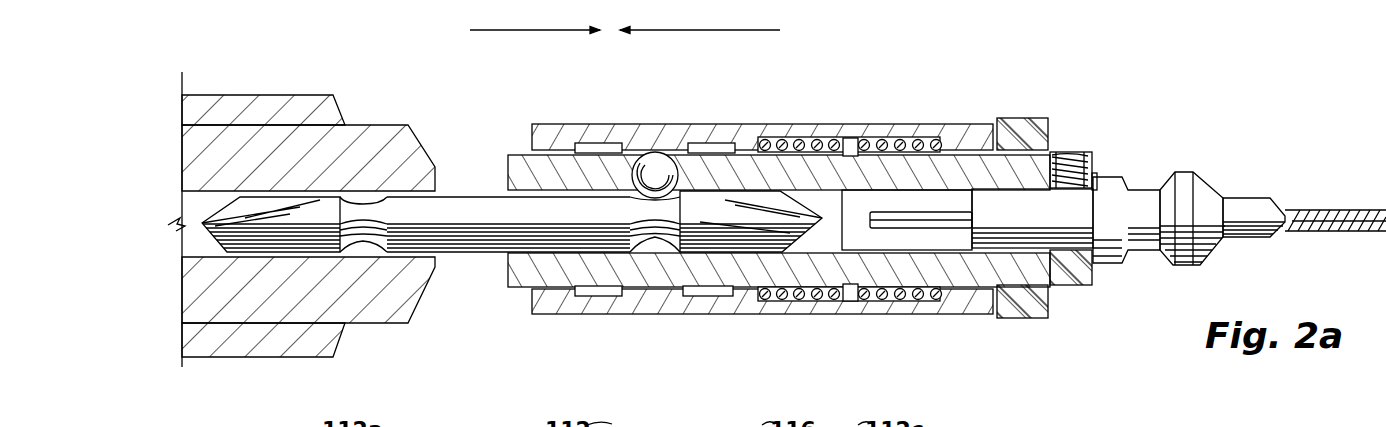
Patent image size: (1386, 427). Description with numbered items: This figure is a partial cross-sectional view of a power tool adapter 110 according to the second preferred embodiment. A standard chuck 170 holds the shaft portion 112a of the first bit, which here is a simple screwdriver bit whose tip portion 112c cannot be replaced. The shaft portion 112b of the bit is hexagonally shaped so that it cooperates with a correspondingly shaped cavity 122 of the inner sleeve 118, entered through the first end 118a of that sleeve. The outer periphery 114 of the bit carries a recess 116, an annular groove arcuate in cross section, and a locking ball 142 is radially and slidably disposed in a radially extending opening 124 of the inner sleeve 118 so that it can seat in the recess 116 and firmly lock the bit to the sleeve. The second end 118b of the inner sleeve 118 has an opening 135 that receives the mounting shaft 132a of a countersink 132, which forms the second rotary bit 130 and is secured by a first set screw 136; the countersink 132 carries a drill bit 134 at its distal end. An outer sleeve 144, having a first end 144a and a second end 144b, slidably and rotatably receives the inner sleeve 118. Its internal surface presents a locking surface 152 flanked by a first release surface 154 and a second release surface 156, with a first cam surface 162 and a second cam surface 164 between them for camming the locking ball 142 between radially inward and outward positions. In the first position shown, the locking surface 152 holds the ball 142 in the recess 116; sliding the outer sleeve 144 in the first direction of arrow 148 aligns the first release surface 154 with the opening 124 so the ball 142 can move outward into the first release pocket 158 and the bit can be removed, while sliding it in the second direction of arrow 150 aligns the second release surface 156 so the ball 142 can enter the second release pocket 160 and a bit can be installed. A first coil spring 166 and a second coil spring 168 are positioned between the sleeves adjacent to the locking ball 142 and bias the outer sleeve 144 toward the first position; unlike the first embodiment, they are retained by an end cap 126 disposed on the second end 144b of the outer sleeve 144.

The adapter 110 is at (1190, 87).
The shaft portion 112a is at (262, 200).
The shaft portion 112b is at (485, 224).
The tip portion 112c is at (793, 246).
The outer periphery 114 is at (434, 262).
The recess 116 is at (650, 240).
The inner sleeve 118 is at (835, 140).
The first end of inner sleeve 118a is at (460, 255).
The second end of inner sleeve 118b is at (1092, 170).
The cavity 122 is at (868, 152).
The radially extending opening 124 is at (688, 145).
The collar flange 126 is at (1007, 118).
The second rotary bit 130 is at (1213, 177).
The countersink 132 is at (1288, 232).
The mounting shaft 132a is at (1073, 255).
The drill bit 134 is at (1352, 210).
The opening 135 is at (1090, 178).
The first set screw 136 is at (1073, 152).
The locking ball 142 is at (663, 160).
The outer sleeve 144 is at (830, 123).
The first end of outer sleeve 144a is at (520, 300).
The second end of outer sleeve 144b is at (963, 303).
The arrow 148 is at (570, 28).
The arrow 150 is at (658, 28).
The locking surface 152 is at (628, 135).
The first release surface 154 is at (728, 136).
The second release surface 156 is at (604, 127).
The first release pocket 158 is at (724, 145).
The second release pocket 160 is at (592, 127).
The first cam surface 162 is at (675, 297).
The second cam surface 164 is at (580, 292).
The first coil spring 166 is at (897, 142).
The second coil spring 168 is at (797, 141).
The chuck 170 is at (403, 148).